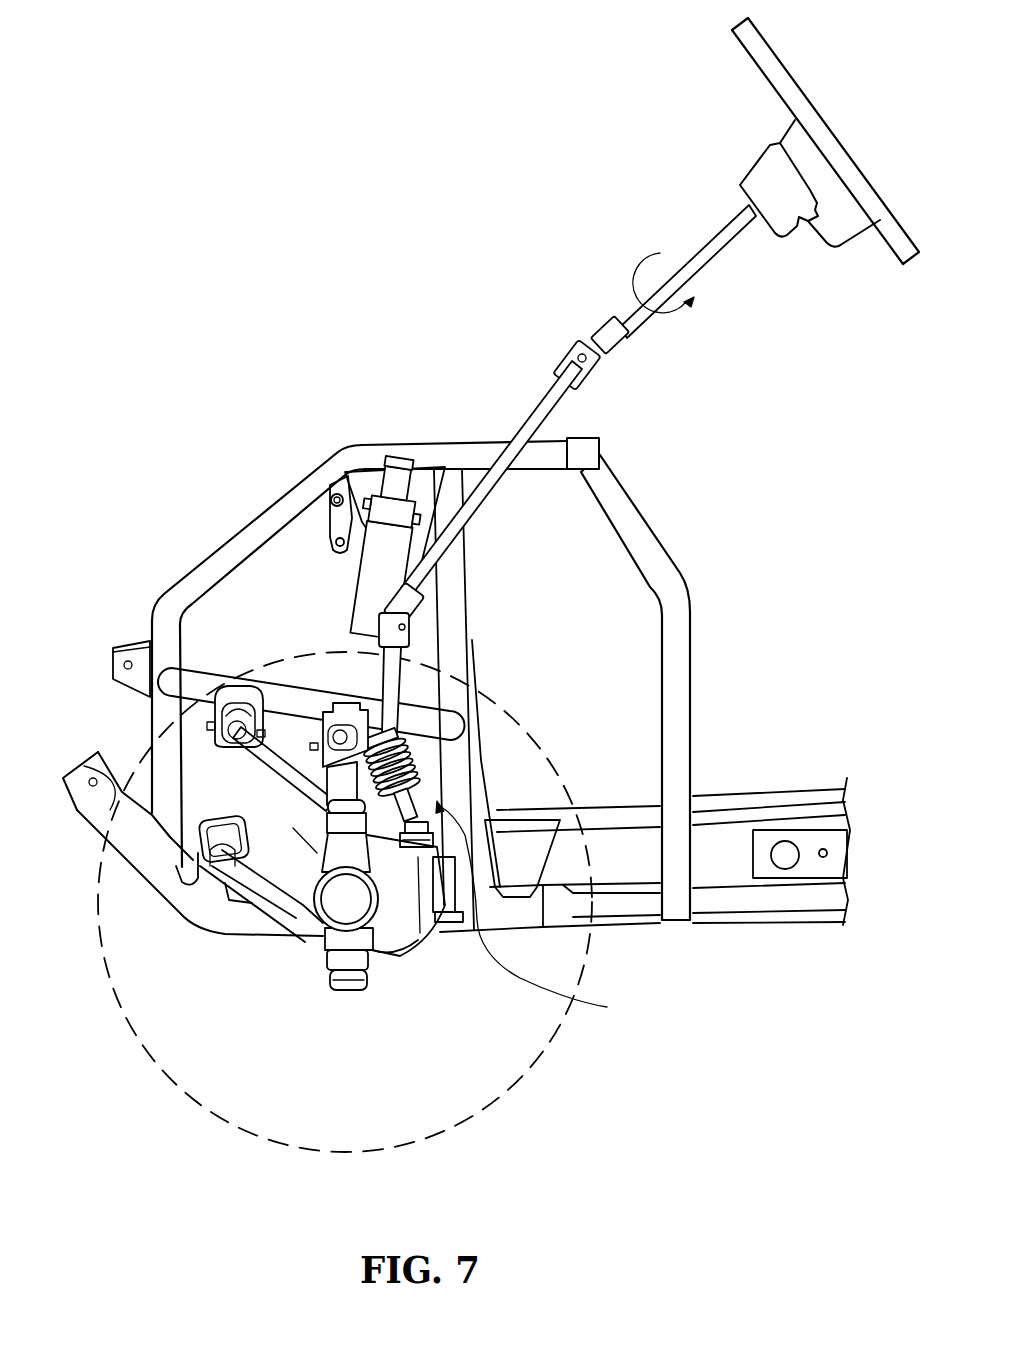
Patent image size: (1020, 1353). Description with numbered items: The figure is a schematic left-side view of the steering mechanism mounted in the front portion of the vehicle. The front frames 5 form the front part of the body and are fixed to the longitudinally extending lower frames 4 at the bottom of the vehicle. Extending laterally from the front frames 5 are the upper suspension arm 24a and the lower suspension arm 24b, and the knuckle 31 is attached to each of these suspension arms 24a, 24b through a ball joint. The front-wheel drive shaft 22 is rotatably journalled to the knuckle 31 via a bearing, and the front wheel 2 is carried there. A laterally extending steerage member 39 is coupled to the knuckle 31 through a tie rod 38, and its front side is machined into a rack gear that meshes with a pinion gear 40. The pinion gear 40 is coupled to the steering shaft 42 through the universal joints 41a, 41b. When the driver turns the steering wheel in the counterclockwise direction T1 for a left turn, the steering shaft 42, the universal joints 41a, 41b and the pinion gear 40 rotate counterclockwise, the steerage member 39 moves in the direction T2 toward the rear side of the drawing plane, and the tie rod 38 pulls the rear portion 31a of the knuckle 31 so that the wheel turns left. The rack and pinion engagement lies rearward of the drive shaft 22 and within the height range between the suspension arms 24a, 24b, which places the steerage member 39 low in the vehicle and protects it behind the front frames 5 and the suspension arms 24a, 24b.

The front wheel 2 is at (492, 1103).
The lower frame 4 is at (150, 862).
The front frame 5 is at (247, 535).
The front-wheel drive shaft 22 is at (322, 922).
The upper suspension arm 24a is at (268, 773).
The lower suspension arm 24b is at (292, 912).
The knuckle 31 is at (303, 828).
The rear portion of the knuckle 31a is at (417, 920).
The tie rod 38 is at (428, 787).
The steerage member 39 is at (427, 793).
The pinion gear 40 is at (400, 733).
The universal joint 41a is at (383, 632).
The universal joint 41b is at (562, 370).
The steering shaft 42 is at (694, 262).
The counterclockwise direction T1 is at (640, 277).
The direction of steerage member movement T2 is at (539, 912).